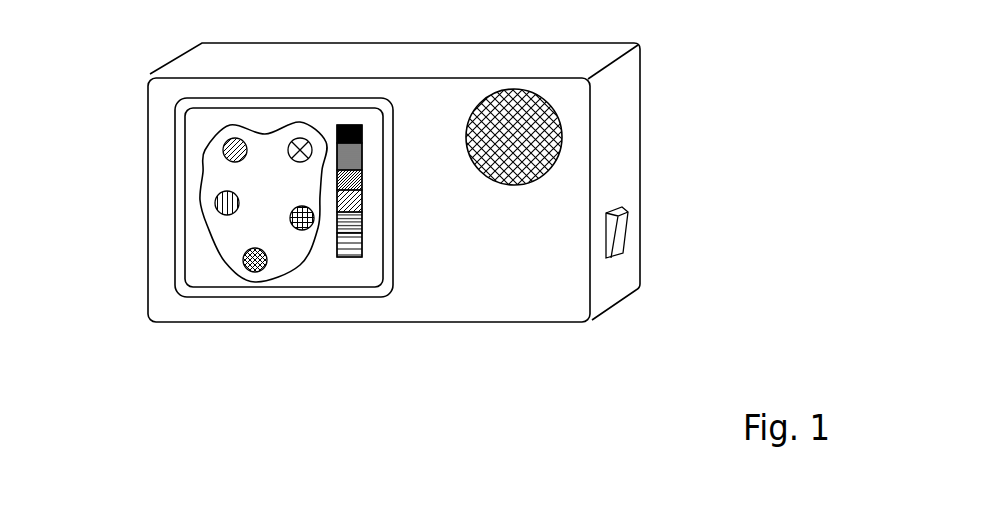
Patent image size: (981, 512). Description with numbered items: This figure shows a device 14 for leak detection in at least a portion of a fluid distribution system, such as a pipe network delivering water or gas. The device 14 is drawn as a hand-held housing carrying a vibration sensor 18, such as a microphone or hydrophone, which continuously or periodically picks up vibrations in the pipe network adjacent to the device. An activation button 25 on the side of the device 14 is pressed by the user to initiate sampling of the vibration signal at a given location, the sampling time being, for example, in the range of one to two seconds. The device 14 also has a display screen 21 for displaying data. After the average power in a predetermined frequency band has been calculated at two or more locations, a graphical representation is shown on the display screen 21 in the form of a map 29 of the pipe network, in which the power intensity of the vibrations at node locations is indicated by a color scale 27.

The device 14 is at (672, 78).
The vibration sensor 18 is at (513, 120).
The display screen 21 is at (185, 220).
The activation button 25 is at (620, 237).
The color scale 27 is at (364, 152).
The map 29 is at (246, 130).